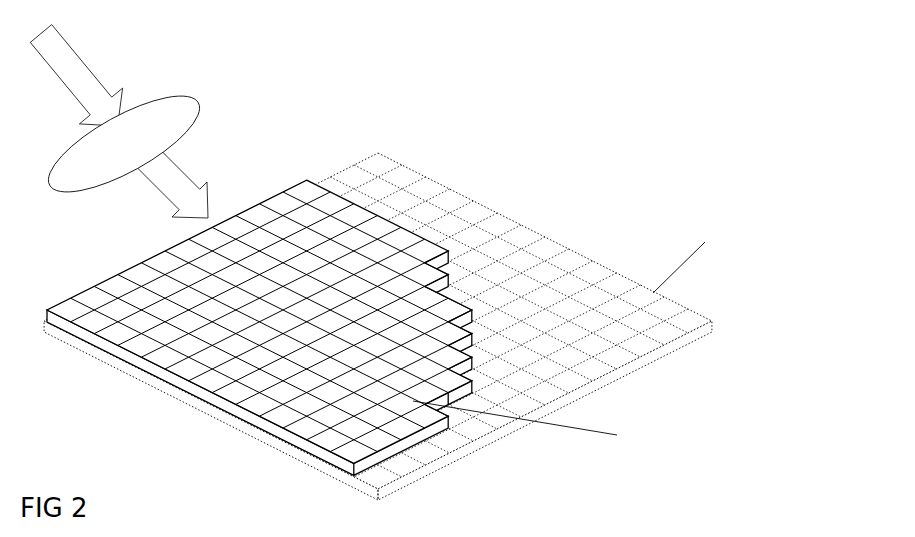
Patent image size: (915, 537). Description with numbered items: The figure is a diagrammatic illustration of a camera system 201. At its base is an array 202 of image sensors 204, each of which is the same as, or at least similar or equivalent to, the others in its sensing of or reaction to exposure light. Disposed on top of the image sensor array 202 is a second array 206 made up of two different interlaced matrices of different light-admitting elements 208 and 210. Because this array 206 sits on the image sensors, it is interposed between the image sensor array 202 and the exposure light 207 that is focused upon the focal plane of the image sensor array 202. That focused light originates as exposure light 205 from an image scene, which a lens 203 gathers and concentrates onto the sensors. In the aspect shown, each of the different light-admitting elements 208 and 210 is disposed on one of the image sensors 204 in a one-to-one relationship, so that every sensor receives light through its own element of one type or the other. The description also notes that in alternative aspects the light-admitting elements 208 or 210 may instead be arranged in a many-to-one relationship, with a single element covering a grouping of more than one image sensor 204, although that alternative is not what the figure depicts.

The camera system 201 is at (457, 262).
The array of image sensors 202 is at (465, 326).
The lens 203 is at (183, 118).
The image sensors 204 is at (686, 317).
The exposure light 205 is at (88, 80).
The array 206 is at (225, 422).
The exposure light 207 is at (185, 173).
The light-admitting elements 208 is at (449, 327).
The light-admitting elements 210 is at (185, 373).